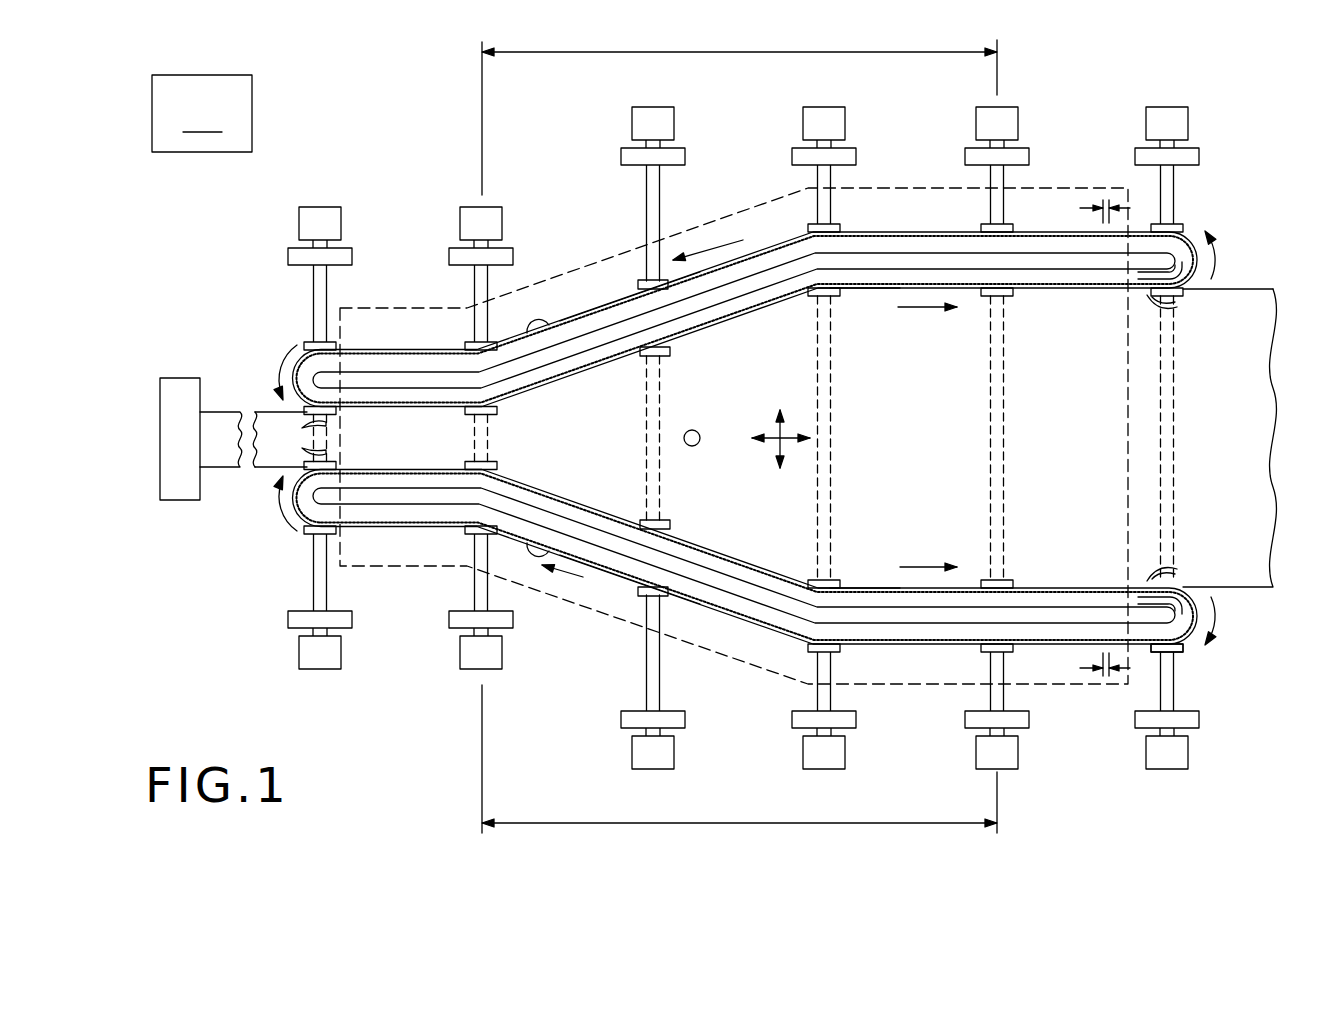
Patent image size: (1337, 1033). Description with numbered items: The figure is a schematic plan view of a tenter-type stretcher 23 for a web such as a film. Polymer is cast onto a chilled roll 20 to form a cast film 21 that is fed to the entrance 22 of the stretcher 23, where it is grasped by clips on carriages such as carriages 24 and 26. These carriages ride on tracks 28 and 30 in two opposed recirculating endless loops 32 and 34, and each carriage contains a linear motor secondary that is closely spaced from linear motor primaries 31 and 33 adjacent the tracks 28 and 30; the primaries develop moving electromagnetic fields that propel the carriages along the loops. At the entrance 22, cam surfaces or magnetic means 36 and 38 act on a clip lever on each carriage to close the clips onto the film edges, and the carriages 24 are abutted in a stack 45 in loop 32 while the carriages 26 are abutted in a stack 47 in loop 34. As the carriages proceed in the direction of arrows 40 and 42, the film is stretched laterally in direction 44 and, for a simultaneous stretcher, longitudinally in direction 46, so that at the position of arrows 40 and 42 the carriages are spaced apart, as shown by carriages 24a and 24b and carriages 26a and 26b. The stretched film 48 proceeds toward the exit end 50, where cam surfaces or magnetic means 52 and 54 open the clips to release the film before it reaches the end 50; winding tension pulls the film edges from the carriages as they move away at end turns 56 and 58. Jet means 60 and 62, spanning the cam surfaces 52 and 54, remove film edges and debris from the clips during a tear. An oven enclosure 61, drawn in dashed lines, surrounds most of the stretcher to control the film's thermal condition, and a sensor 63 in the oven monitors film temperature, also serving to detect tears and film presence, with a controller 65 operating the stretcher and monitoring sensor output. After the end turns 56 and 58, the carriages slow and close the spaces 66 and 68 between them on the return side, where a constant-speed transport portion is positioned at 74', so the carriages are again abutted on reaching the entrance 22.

The chilled roll 20 is at (160, 432).
The cast film 21 is at (280, 447).
The entrance 22 is at (283, 425).
The stretcher 23 is at (410, 185).
The carriage 24 is at (773, 257).
The carriage 24a is at (870, 295).
The carriage 24b is at (865, 295).
The carriage 26 is at (737, 604).
The carriage 26a is at (917, 557).
The carriage 26b is at (867, 582).
The track 28 is at (393, 363).
The track 30 is at (398, 510).
The linear motor primary 31 is at (557, 327).
The recirculating endless loop 32 is at (607, 333).
The linear motor primary 33 is at (556, 545).
The recirculating endless loop 34 is at (588, 535).
The cam surface or magnetic means 36 is at (302, 427).
The cam surface or magnetic means 38 is at (302, 452).
The arrow 40 is at (913, 217).
The arrow 42 is at (917, 638).
The direction 44 is at (771, 436).
The stack 45 is at (290, 375).
The direction 46 is at (773, 440).
The stack 47 is at (290, 507).
The stretched film 48 is at (1048, 425).
The exit end 50 is at (1213, 285).
The cam surface or magnetic means 52 is at (1177, 303).
The cam surface or magnetic means 54 is at (1180, 578).
The end turn 56 is at (1197, 262).
The end turn 58 is at (1187, 636).
The jet means 60 is at (1180, 260).
The oven enclosure 61 is at (632, 248).
The jet means 62 is at (1180, 653).
The sensor 63 is at (694, 447).
The controller 65 is at (202, 113).
The space 66 is at (1102, 200).
The space 68 is at (1103, 680).
The transport portion 74' is at (739, 436).